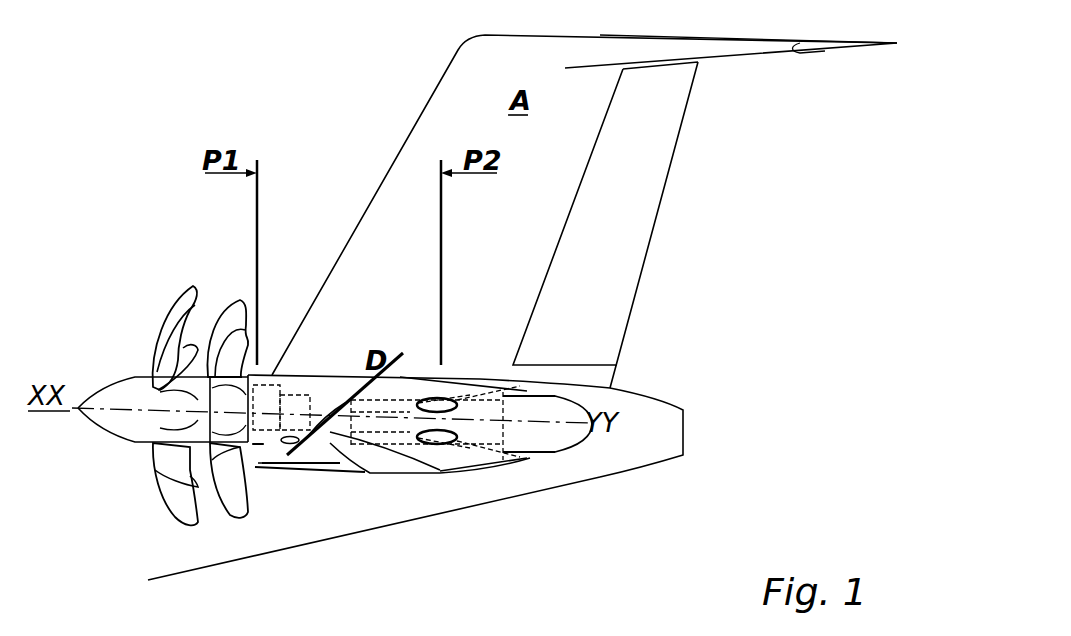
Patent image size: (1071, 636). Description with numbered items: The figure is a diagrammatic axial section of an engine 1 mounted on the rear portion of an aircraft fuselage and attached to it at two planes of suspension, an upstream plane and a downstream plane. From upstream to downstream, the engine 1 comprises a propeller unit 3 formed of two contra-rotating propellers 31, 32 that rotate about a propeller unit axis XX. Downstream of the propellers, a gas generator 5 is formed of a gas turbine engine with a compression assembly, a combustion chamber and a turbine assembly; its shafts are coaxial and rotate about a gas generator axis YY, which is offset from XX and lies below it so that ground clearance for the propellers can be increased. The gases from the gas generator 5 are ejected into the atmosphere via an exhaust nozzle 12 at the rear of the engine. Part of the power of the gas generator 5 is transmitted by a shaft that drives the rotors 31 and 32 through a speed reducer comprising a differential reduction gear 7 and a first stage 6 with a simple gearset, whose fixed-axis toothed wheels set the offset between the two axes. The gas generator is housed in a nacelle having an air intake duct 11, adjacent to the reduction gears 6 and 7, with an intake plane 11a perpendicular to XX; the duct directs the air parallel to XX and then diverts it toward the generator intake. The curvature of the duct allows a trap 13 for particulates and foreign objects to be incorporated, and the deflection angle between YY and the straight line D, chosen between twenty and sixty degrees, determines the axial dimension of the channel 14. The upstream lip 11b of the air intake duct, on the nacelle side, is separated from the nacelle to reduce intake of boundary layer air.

The engine 1 is at (112, 503).
The propeller unit 3 is at (155, 293).
The propeller 31 is at (185, 302).
The propeller 32 is at (237, 307).
The gas generator 5 is at (410, 378).
The first stage 6 is at (302, 380).
The differential reduction gear 7 is at (269, 378).
The air intake duct 11 is at (305, 476).
The intake plane 11a is at (258, 463).
The upstream lip 11b is at (253, 445).
The exhaust nozzle 12 is at (542, 453).
The trap 13 is at (378, 475).
The channel 14 is at (393, 440).